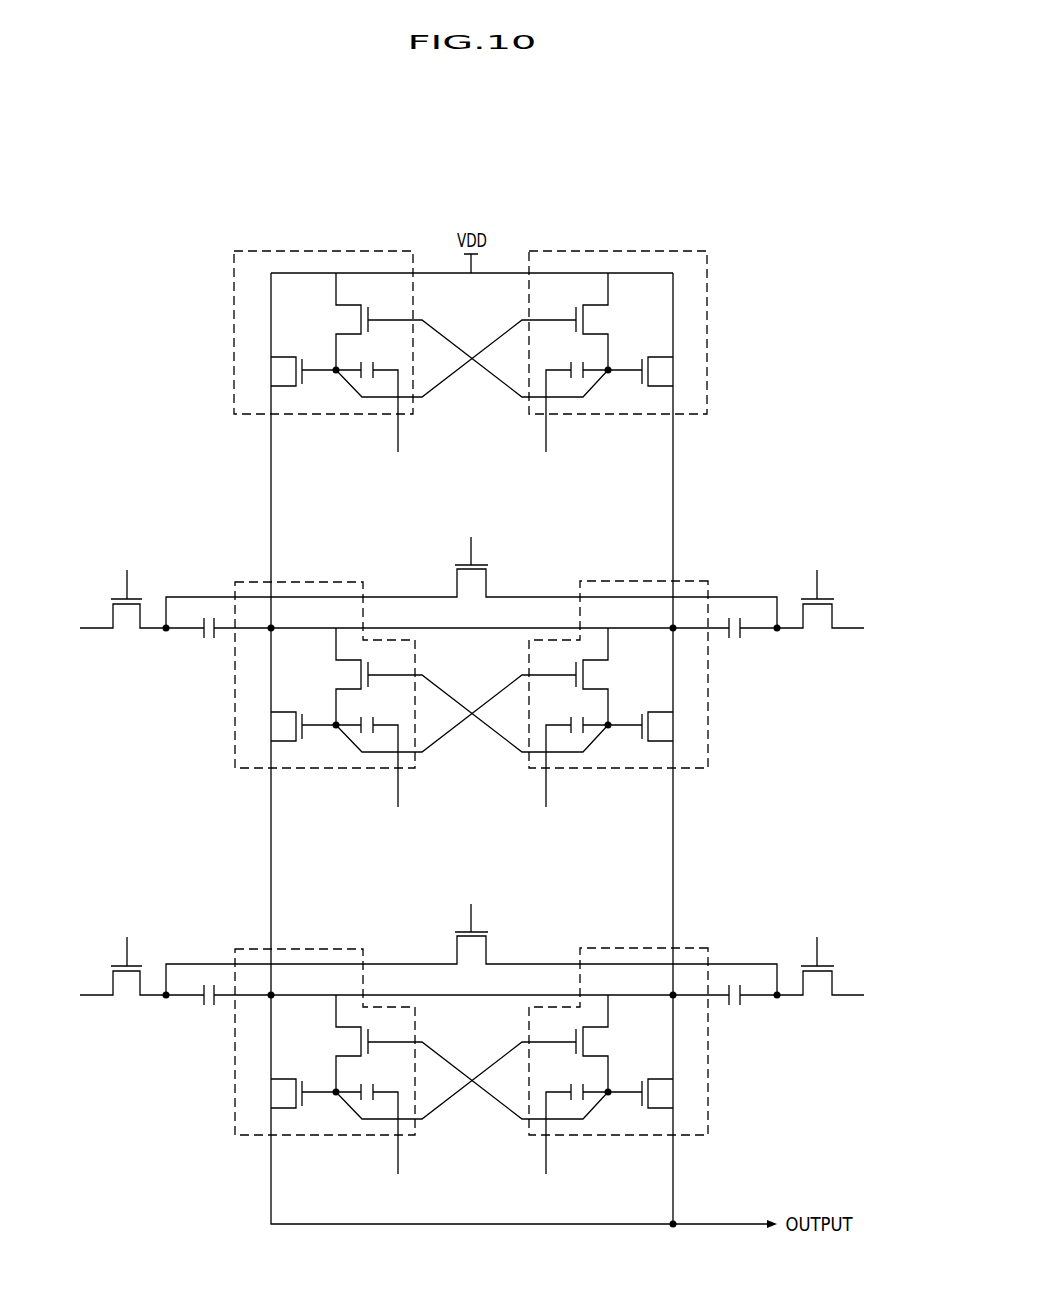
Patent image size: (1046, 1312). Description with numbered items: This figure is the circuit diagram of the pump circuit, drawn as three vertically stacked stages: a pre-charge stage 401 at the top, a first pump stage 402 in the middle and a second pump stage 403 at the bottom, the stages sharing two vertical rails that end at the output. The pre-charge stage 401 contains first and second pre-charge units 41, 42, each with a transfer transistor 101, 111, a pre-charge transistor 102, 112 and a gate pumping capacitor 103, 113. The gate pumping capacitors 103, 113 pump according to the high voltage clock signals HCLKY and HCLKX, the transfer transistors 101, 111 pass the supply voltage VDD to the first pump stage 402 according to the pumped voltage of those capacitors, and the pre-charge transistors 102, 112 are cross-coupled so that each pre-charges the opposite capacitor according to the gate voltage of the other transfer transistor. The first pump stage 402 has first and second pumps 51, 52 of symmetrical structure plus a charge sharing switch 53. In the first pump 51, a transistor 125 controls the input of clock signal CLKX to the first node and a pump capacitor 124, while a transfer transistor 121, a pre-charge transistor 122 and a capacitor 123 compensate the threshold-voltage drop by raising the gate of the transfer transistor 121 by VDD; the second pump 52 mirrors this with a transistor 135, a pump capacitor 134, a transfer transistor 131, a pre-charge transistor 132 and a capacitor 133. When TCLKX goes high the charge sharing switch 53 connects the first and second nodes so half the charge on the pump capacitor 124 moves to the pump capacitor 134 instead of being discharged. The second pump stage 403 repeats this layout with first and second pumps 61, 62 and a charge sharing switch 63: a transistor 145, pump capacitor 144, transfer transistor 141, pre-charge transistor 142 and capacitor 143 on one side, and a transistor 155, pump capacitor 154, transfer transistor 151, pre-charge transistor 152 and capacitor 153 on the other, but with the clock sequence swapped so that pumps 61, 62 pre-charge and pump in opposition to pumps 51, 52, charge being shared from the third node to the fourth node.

The pre-charge stage 401 is at (709, 210).
The first pump stage 402 is at (711, 538).
The second pump stage 403 is at (711, 905).
The first pre-charge unit 41 is at (325, 251).
The second pre-charge unit 42 is at (616, 251).
The first pump 51 is at (324, 582).
The second pump 52 is at (616, 581).
The charge sharing switch 53 is at (471, 582).
The first pump 61 is at (324, 949).
The second pump 62 is at (616, 948).
The charge sharing switch 63 is at (471, 949).
The transfer transistor 101 is at (289, 371).
The pre-charge transistor 102 is at (454, 335).
The gate pumping capacitor 103 is at (367, 395).
The transfer transistor 111 is at (653, 371).
The pre-charge transistor 112 is at (604, 321).
The gate pumping capacitor 113 is at (577, 394).
The transfer transistor 121 is at (289, 726).
The pre-charge transistor 122 is at (454, 690).
The capacitor 123 is at (367, 750).
The pump capacitor 124 is at (218, 643).
The transistor 125 is at (123, 615).
The transfer transistor 131 is at (653, 726).
The pre-charge transistor 132 is at (604, 676).
The capacitor 133 is at (577, 749).
The pump capacitor 134 is at (725, 641).
The transistor 135 is at (820, 612).
The transfer transistor 141 is at (289, 1093).
The pre-charge transistor 142 is at (454, 1057).
The capacitor 143 is at (367, 1117).
The pump capacitor 144 is at (218, 1010).
The transistor 145 is at (123, 982).
The transfer transistor 151 is at (653, 1093).
The pre-charge transistor 152 is at (604, 1043).
The capacitor 153 is at (577, 1116).
The pump capacitor 154 is at (725, 1008).
The transistor 155 is at (820, 979).